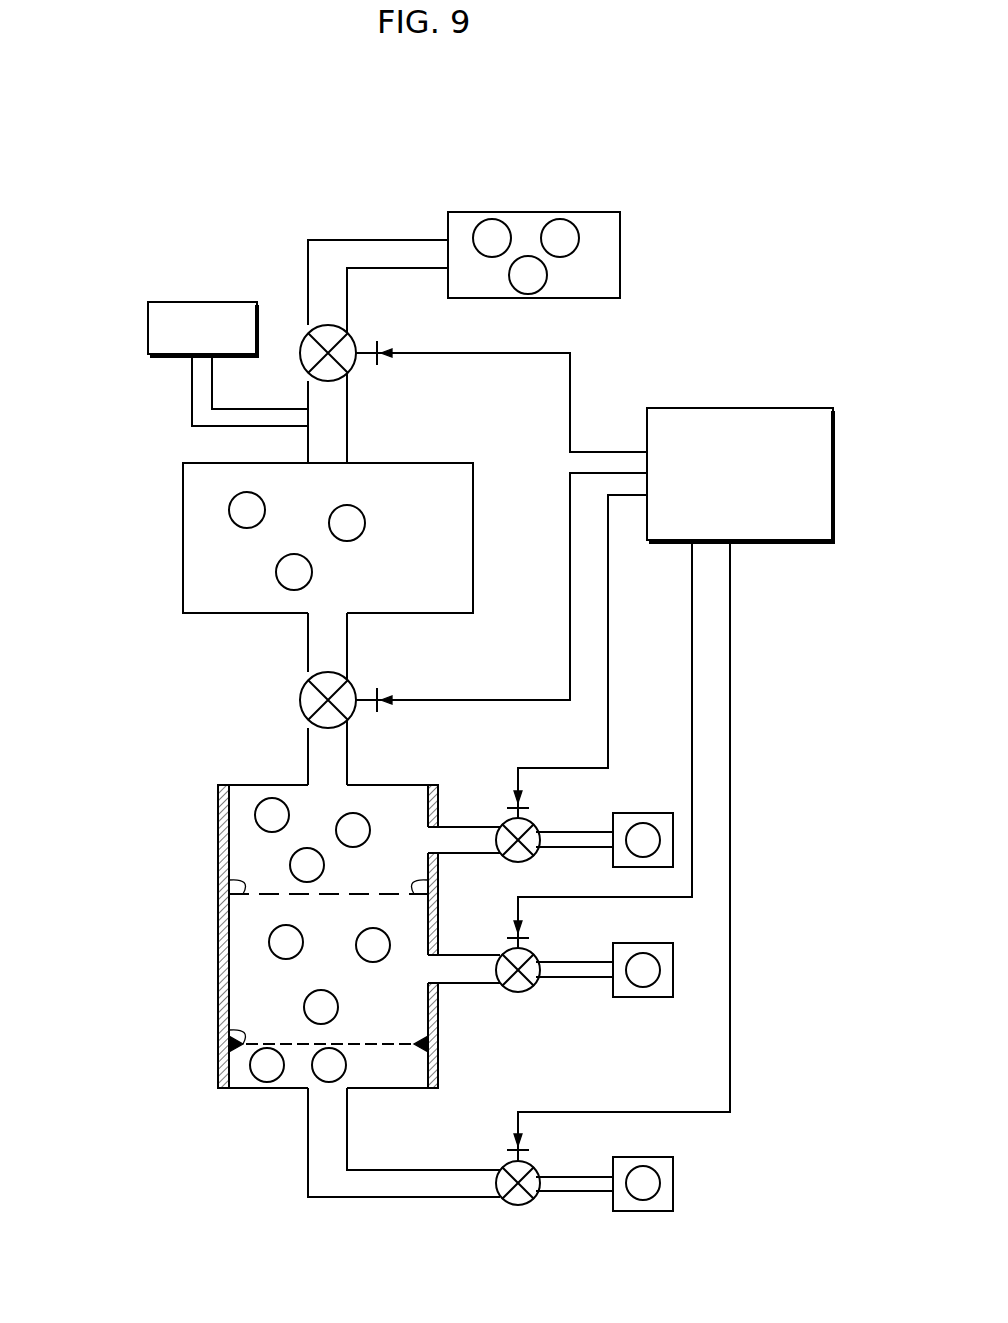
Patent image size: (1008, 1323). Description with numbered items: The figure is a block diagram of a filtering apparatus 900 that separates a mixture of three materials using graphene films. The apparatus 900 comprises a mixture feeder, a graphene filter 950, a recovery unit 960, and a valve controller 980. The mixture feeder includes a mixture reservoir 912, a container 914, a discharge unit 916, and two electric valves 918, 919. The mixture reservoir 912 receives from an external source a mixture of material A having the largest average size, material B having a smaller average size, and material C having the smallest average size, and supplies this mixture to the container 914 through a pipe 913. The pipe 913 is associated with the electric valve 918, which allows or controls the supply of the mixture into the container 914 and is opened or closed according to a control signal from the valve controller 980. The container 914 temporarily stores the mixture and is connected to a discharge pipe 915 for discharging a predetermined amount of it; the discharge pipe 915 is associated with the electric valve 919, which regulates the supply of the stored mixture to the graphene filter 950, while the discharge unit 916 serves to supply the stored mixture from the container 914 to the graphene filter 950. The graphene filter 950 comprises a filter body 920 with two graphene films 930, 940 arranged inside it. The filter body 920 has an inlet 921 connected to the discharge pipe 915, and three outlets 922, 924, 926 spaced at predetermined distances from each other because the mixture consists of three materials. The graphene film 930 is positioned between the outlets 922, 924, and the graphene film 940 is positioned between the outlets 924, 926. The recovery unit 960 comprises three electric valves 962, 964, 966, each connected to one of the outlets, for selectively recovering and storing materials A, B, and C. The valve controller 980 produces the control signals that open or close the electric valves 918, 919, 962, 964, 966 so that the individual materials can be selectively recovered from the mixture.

The filtering apparatus 900 is at (691, 150).
The mixture reservoir 912 is at (546, 210).
The pipe 913 is at (370, 239).
The container 914 is at (183, 538).
The discharge pipe 915 is at (308, 649).
The discharge unit 916 is at (148, 328).
The electric valve 918 is at (358, 372).
The electric valve 919 is at (300, 704).
The filter body 920 is at (218, 919).
The inlet 921 is at (349, 747).
The outlet 922 is at (465, 855).
The outlet 924 is at (465, 985).
The outlet 926 is at (383, 1199).
The graphene film 930 is at (229, 881).
The graphene film 940 is at (229, 1030).
The graphene filter 950 is at (210, 968).
The recovery unit 960 is at (622, 1010).
The electric valve 962 is at (500, 822).
The electric valve 964 is at (532, 990).
The electric valve 966 is at (516, 1205).
The valve controller 980 is at (715, 408).